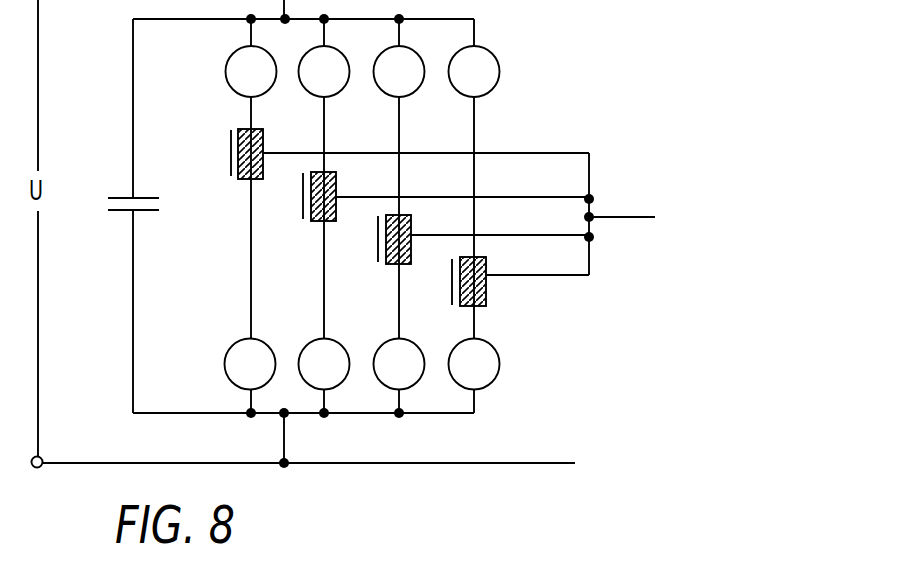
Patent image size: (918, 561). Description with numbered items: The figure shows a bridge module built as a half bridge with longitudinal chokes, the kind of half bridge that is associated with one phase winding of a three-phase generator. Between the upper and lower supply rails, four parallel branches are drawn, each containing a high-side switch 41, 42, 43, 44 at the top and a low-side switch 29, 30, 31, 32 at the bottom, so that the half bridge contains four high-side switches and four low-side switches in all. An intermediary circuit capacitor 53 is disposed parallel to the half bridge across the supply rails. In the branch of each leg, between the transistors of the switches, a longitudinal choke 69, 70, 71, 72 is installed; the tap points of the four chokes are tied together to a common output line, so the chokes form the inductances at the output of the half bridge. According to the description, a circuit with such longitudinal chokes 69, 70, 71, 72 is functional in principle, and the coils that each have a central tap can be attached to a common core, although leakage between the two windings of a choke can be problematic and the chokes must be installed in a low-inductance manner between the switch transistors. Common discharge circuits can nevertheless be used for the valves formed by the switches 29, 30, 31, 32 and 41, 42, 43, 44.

The low-side switch 29 is at (230, 356).
The low-side switch 30 is at (314, 356).
The low-side switch 31 is at (388, 356).
The low-side switch 32 is at (464, 356).
The high-side switch 41 is at (233, 74).
The high-side switch 42 is at (307, 74).
The high-side switch 43 is at (382, 74).
The high-side switch 44 is at (457, 74).
The intermediary circuit capacitor 53 is at (138, 212).
The longitudinal choke 69 is at (229, 162).
The longitudinal choke 70 is at (301, 205).
The longitudinal choke 71 is at (376, 248).
The longitudinal choke 72 is at (450, 271).